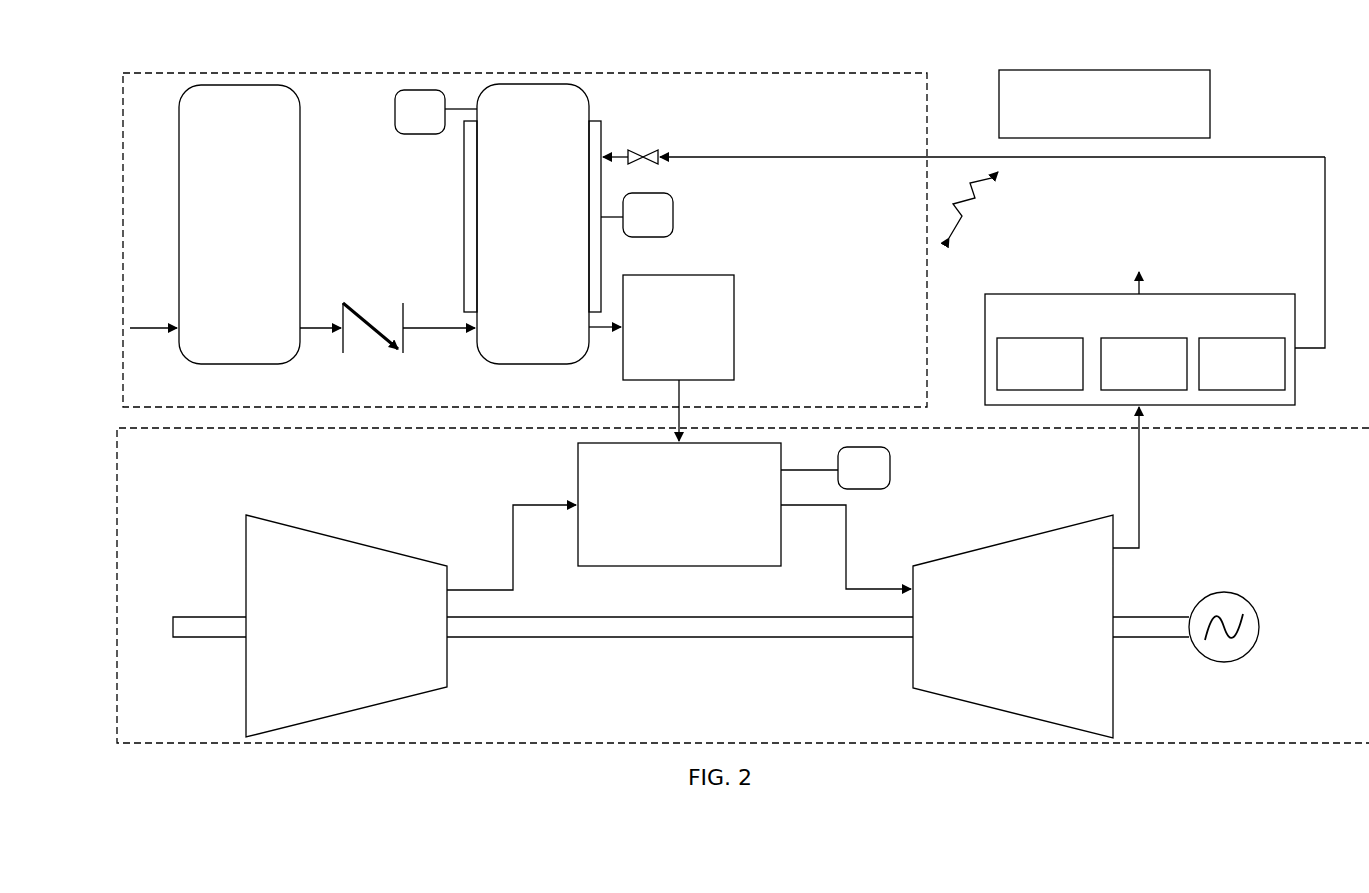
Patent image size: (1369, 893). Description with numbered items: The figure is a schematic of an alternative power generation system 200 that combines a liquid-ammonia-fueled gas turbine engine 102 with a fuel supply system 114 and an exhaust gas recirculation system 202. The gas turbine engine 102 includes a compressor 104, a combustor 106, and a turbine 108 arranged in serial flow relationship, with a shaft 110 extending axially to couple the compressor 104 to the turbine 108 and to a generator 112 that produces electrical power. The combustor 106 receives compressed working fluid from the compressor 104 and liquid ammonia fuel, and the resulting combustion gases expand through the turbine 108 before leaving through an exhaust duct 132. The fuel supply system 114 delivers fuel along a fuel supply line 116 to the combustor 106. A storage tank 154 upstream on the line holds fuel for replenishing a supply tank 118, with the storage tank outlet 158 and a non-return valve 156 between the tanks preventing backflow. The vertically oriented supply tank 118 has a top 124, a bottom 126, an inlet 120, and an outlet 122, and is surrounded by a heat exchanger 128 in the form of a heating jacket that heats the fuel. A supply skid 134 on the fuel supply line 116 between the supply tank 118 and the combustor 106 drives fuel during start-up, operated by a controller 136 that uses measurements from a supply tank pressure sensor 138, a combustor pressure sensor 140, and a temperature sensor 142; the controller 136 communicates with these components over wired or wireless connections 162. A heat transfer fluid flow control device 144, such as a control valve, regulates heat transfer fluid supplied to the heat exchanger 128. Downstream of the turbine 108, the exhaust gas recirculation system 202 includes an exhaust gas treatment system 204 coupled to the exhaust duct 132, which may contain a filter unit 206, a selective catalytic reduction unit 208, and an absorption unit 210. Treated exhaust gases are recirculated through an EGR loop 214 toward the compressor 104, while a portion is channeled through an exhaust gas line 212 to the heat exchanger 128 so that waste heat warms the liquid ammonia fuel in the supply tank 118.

The power generation system 200 is at (93, 103).
The gas turbine engine 102 is at (115, 640).
The compressor 104 is at (330, 644).
The combustor 106 is at (661, 519).
The turbine 108 is at (995, 644).
The shaft 110 is at (733, 639).
The generator 112 is at (1261, 616).
The fuel supply system 114 is at (120, 278).
The fuel supply line 116 is at (141, 340).
The supply tank 118 is at (515, 197).
The inlet 120 is at (477, 330).
The outlet 122 is at (589, 333).
The top 124 is at (553, 81).
The bottom 126 is at (540, 363).
The heat exchanger 128 is at (464, 181).
The exhaust duct 132 is at (1140, 465).
The supply skid 134 is at (660, 365).
The controller 136 is at (1086, 130).
The supply tank pressure sensor 138 is at (403, 124).
The combustor pressure sensor 140 is at (846, 480).
The temperature sensor 142 is at (631, 227).
The heat transfer fluid flow control device 144 is at (637, 151).
The storage tank 154 is at (222, 197).
The non-return valve 156 is at (178, 326).
The outlet 158 is at (326, 327).
The connections 162 is at (985, 198).
The exhaust gas recirculation system 202 is at (1303, 140).
The exhaust gas treatment system 204 is at (1121, 328).
The filter unit 206 is at (1022, 376).
The selective catalytic reduction unit 208 is at (1126, 376).
The absorption unit 210 is at (1224, 376).
The exhaust gas line 212 is at (1203, 158).
The EGR loop 214 is at (1142, 284).